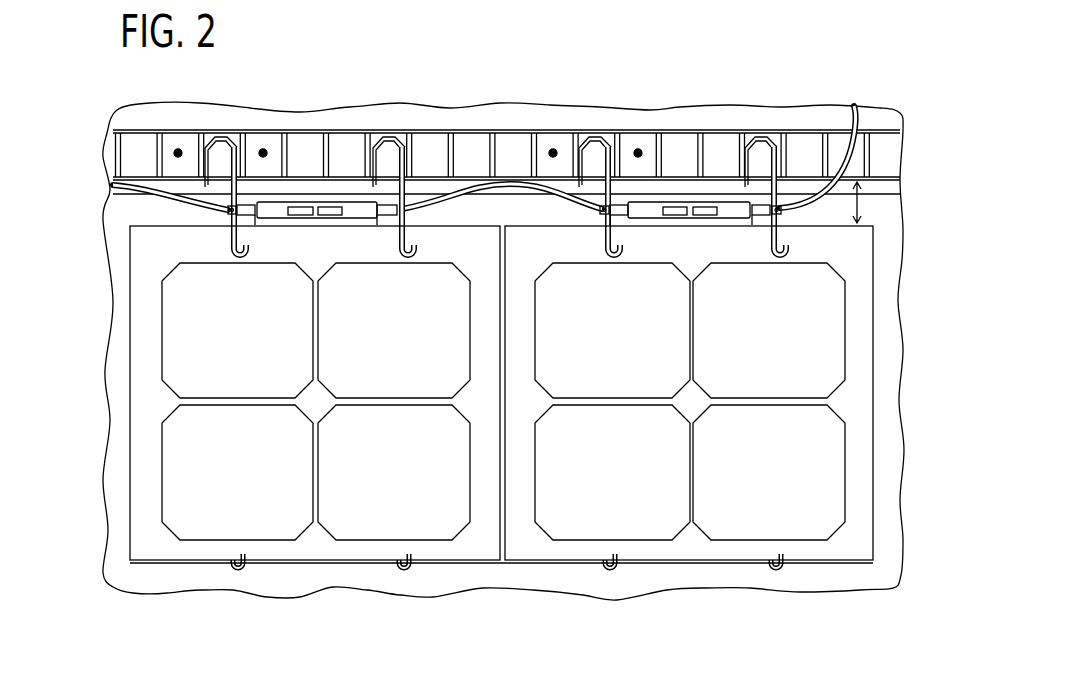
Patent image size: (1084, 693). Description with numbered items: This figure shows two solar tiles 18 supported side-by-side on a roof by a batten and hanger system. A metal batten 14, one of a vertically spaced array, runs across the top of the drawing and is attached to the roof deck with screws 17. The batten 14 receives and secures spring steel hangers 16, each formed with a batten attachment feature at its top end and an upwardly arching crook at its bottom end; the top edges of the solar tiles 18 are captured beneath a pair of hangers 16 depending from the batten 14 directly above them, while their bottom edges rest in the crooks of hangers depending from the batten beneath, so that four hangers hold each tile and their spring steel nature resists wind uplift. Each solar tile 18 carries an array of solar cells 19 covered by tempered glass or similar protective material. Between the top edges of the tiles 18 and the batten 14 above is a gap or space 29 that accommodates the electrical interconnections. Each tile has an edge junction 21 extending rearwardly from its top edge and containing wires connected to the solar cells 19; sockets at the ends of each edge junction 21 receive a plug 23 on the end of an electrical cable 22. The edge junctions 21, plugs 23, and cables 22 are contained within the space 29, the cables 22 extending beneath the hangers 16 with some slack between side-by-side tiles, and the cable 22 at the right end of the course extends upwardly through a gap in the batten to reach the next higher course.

The metal batten 14 is at (432, 155).
The spring steel hanger 16 is at (229, 239).
The screw 17 is at (553, 151).
The solar tile 18 is at (128, 327).
The solar cell 19 is at (224, 346).
The edge junction 21 is at (312, 200).
The electrical cable 22 is at (860, 113).
The plug 23 is at (243, 216).
The gap or space 29 is at (860, 203).